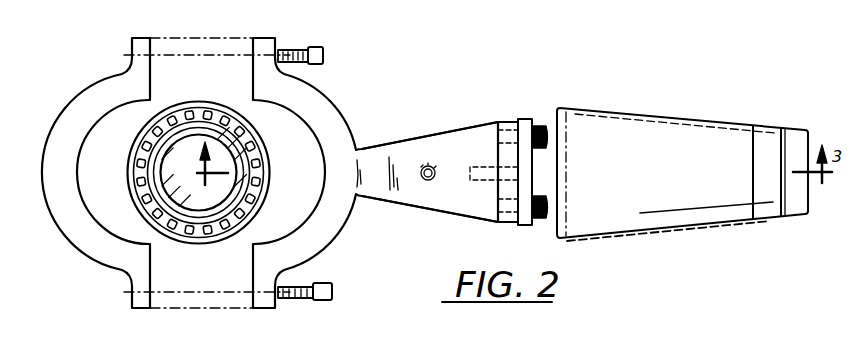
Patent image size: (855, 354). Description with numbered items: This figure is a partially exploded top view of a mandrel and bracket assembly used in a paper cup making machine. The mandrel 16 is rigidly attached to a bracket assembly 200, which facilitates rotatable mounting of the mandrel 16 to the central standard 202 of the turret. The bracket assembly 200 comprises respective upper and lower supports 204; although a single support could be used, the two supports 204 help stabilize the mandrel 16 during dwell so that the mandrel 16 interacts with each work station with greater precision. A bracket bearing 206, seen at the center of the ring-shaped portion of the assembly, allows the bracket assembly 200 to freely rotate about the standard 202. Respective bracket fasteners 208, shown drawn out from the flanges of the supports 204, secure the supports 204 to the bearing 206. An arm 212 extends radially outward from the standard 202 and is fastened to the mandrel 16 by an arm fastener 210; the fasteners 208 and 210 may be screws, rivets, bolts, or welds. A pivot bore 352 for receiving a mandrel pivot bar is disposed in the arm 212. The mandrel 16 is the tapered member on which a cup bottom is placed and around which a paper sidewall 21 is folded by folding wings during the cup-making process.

The bracket assembly 200 is at (495, 63).
The upper and lower supports 204 is at (123, 74).
The central standard 202 is at (217, 85).
The bracket bearing 206 is at (203, 243).
The bracket fasteners 208 is at (323, 50).
The arm 212 is at (432, 134).
The pivot bore 352 is at (427, 181).
The arm fastener 210 is at (544, 121).
The mandrel 16 is at (673, 127).
The paper sidewall 21 is at (777, 126).